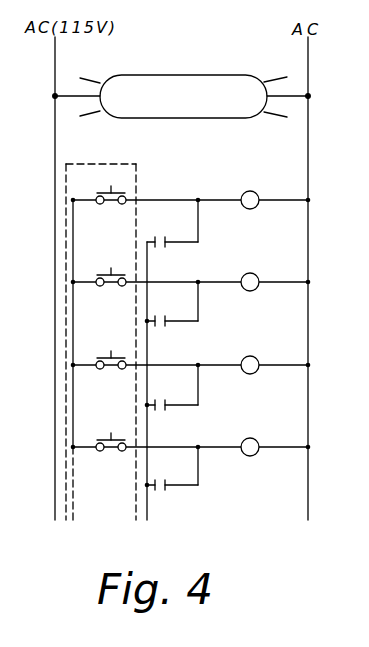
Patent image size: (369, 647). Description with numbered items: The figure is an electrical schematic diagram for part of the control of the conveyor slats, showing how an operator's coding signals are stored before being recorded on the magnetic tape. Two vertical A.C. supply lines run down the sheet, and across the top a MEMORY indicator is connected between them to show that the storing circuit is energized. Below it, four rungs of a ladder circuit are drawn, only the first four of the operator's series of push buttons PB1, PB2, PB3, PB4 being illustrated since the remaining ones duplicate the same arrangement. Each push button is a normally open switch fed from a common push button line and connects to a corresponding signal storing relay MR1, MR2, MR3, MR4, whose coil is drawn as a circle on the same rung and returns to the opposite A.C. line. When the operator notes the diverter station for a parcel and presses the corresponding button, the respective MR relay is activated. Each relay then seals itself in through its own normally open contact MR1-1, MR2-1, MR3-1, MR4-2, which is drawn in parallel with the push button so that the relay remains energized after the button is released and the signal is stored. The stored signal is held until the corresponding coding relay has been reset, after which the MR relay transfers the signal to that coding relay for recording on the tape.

The memory on indicator MEMORY is at (182, 97).
The push button PB1 is at (107, 186).
The push button PB2 is at (105, 265).
The push button PB3 is at (103, 348).
The push button PB4 is at (103, 430).
The signal storing relay MR1 is at (263, 186).
The signal storing relay MR2 is at (270, 272).
The signal storing relay MR3 is at (266, 351).
The signal storing relay MR4 is at (270, 433).
The normally open contact MR1-1 is at (183, 234).
The normally open contact MR2-1 is at (180, 316).
The normally open contact MR3-1 is at (180, 398).
The normally open contact MR4-2 is at (181, 479).